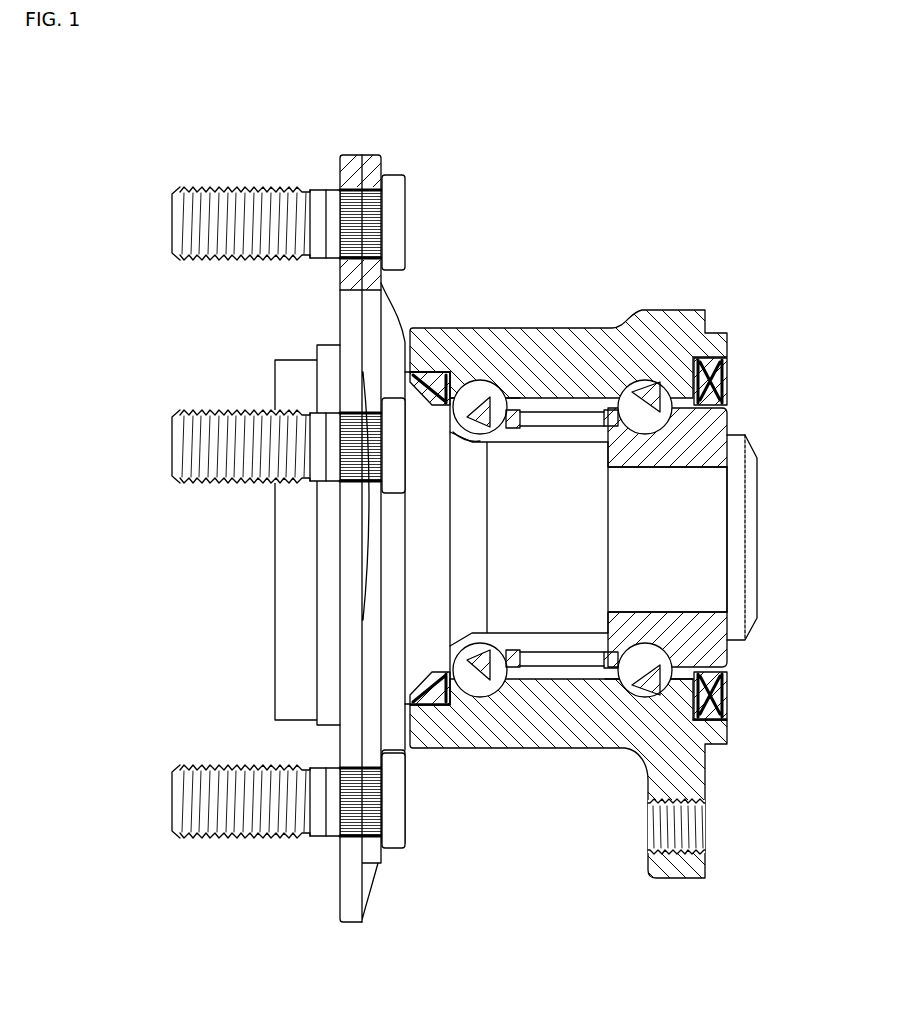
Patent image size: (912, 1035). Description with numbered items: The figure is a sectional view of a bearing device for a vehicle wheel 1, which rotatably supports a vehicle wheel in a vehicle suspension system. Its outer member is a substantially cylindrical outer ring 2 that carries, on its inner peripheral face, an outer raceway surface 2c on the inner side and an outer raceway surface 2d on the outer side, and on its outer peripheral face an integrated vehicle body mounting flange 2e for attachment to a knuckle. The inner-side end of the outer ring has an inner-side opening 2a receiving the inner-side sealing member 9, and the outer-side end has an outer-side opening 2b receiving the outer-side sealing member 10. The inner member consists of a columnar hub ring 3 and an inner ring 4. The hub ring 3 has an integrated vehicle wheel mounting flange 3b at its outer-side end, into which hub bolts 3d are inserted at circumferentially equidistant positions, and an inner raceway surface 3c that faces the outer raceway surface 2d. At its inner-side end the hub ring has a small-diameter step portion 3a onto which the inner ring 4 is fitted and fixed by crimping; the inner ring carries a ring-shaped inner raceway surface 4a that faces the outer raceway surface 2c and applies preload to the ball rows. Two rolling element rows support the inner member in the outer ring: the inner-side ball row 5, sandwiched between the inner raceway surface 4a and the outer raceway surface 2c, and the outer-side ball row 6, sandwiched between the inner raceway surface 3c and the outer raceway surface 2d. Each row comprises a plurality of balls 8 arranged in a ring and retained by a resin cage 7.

The bearing device for a vehicle wheel 1 is at (462, 500).
The outer ring 2 is at (602, 575).
The inner-side opening 2a is at (676, 718).
The outer-side opening 2b is at (440, 700).
The outer raceway surface on the inner side 2c is at (630, 694).
The outer raceway surface on the outer side 2d is at (489, 692).
The vehicle body mounting flange 2e is at (706, 870).
The hub ring 3 is at (490, 515).
The small-diameter step portion 3a is at (705, 614).
The vehicle wheel mounting flange 3b is at (357, 160).
The inner raceway surface 3c is at (462, 434).
The hub bolt 3d is at (256, 189).
The inner ring 4 is at (667, 537).
The inner raceway surface 4a is at (656, 622).
The inner-side ball row 5 is at (688, 272).
The outer-side ball row 6 is at (545, 286).
The cage 7 is at (512, 412).
The ball 8 is at (484, 388).
The inner-side sealing member 9 is at (730, 384).
The outer-side sealing member 10 is at (428, 374).